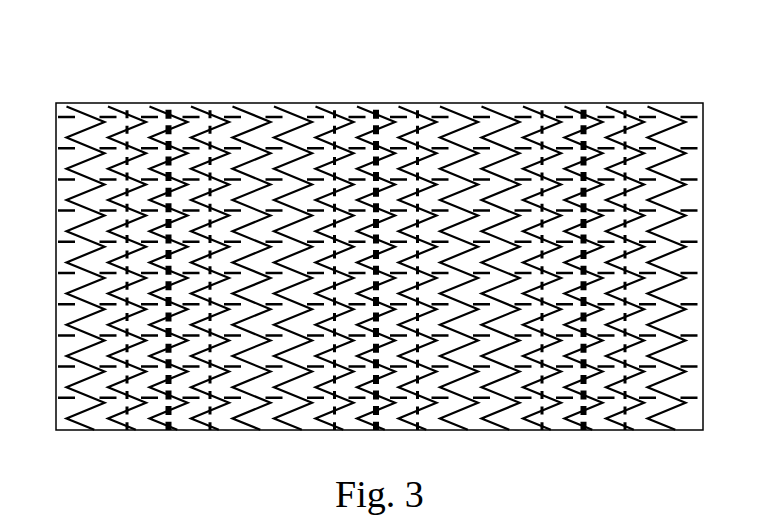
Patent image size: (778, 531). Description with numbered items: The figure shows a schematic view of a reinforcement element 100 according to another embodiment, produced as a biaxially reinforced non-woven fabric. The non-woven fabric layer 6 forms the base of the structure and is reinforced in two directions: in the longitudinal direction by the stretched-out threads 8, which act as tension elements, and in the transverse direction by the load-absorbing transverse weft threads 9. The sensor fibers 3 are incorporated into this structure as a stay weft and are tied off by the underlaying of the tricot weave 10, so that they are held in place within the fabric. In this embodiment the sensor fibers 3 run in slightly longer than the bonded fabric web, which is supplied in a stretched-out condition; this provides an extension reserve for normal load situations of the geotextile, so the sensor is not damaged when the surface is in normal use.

The filter element / pleated filter assembly 100 is at (390, 223).
The sensor fibers 3 is at (170, 103).
The non-woven fabric layer 6 is at (693, 130).
The stretched-out threads 8 is at (127, 103).
The transverse weft threads 9 is at (688, 306).
The tricot weave 10 is at (692, 229).